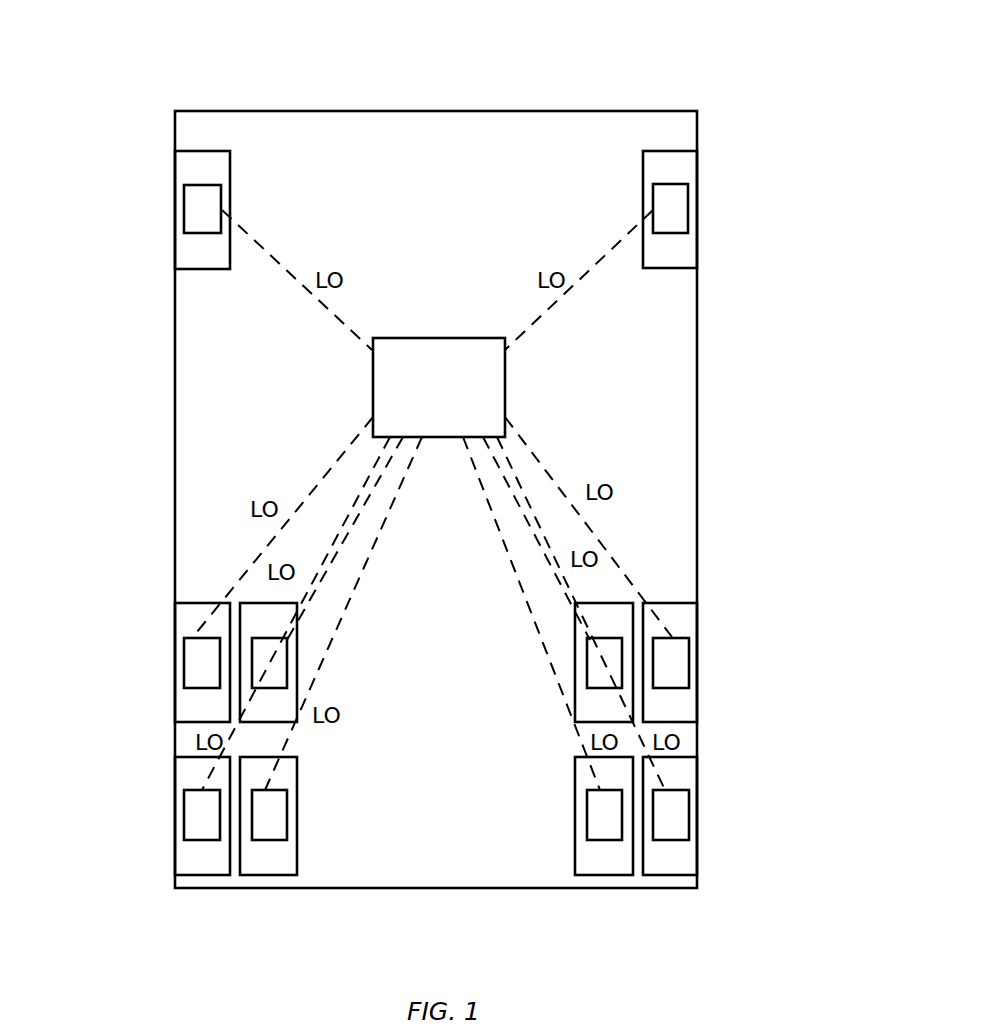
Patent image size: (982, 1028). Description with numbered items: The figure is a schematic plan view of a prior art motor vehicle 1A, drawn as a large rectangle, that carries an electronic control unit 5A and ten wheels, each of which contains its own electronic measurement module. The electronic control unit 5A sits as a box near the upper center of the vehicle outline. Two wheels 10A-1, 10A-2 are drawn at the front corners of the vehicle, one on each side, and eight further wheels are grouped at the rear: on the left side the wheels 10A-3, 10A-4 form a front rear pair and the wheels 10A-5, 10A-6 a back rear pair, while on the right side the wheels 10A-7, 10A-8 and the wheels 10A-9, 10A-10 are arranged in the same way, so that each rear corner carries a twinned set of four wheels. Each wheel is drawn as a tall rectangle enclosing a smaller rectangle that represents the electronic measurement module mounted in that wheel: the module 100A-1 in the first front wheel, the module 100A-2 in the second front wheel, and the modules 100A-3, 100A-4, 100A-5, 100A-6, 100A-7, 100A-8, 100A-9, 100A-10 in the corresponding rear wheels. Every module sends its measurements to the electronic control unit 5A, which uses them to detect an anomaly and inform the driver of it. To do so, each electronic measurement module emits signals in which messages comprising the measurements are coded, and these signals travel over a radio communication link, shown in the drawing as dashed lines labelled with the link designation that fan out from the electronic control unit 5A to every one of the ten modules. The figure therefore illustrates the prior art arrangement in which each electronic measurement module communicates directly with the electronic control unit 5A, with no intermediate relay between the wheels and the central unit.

The motor vehicle 1A is at (500, 111).
The electronic control unit 5A is at (455, 402).
The wheel 10A-1 is at (190, 175).
The wheel 10A-2 is at (686, 172).
The wheel 10A-3 is at (188, 625).
The wheel 10A-4 is at (298, 637).
The wheel 10A-5 is at (188, 780).
The wheel 10A-6 is at (298, 783).
The wheel 10A-7 is at (575, 627).
The wheel 10A-8 is at (688, 625).
The wheel 10A-9 is at (577, 775).
The wheel 10A-10 is at (688, 778).
The electronic measurement module 100A-1 is at (186, 212).
The electronic measurement module 100A-2 is at (688, 212).
The electronic measurement module 100A-3 is at (186, 660).
The electronic measurement module 100A-4 is at (297, 680).
The electronic measurement module 100A-5 is at (186, 815).
The electronic measurement module 100A-6 is at (297, 832).
The electronic measurement module 100A-7 is at (577, 660).
The electronic measurement module 100A-8 is at (690, 665).
The electronic measurement module 100A-9 is at (578, 812).
The electronic measurement module 100A-10 is at (690, 815).